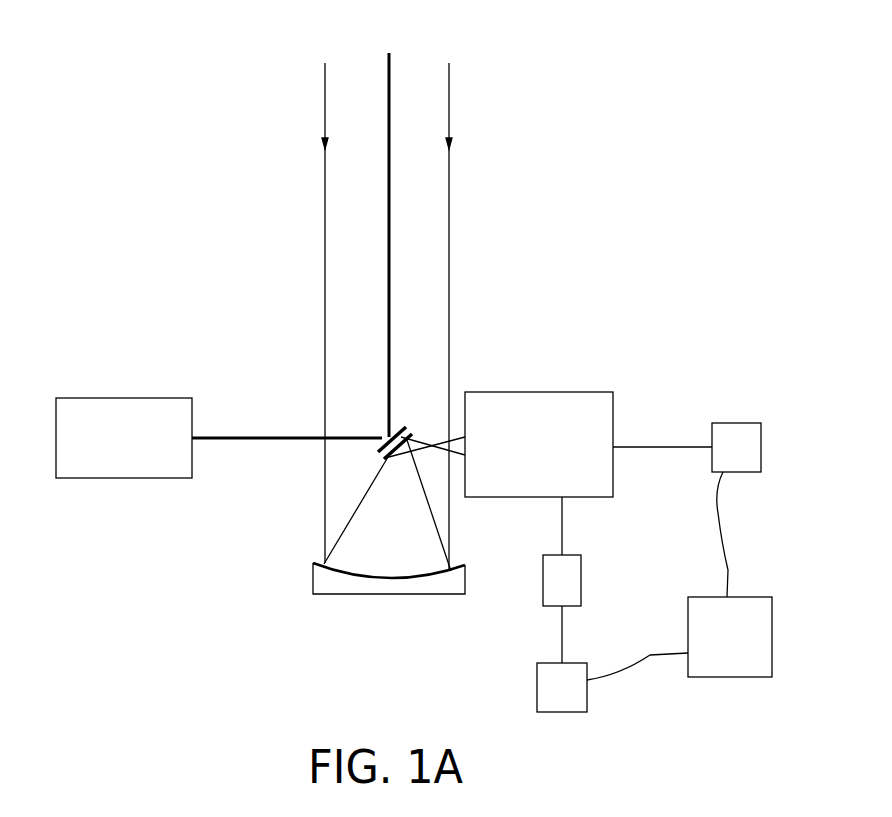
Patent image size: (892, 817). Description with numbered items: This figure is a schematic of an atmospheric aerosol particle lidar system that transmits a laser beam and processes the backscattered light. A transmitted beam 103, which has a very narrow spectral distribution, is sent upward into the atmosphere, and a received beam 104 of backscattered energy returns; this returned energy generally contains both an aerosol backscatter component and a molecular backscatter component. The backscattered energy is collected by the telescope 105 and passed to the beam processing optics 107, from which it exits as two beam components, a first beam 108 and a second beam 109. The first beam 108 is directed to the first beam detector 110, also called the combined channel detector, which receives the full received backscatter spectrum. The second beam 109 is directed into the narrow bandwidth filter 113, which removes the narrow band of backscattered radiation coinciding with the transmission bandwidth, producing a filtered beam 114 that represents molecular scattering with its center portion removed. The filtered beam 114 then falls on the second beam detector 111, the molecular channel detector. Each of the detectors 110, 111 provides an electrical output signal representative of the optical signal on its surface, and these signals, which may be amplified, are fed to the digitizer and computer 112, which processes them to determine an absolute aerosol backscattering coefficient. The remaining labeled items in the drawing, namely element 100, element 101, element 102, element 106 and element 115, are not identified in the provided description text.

The laser source 100 is at (77, 398).
The laser beam 101 is at (240, 433).
The mirror 102 is at (402, 427).
The transmitted beam 103 is at (392, 76).
The received beam 104 is at (450, 79).
The telescope 105 is at (296, 612).
The reflected rays 106 is at (407, 436).
The beam processing optics 107 is at (540, 392).
The first beam 108 is at (658, 447).
The second beam 109 is at (565, 530).
The first beam detector 110 is at (739, 423).
The second beam detector 111 is at (570, 712).
The digitizer and computer 112 is at (720, 677).
The narrow bandwidth filter 113 is at (585, 570).
The filtered beam 114 is at (562, 628).
The concave mirror 115 is at (371, 572).